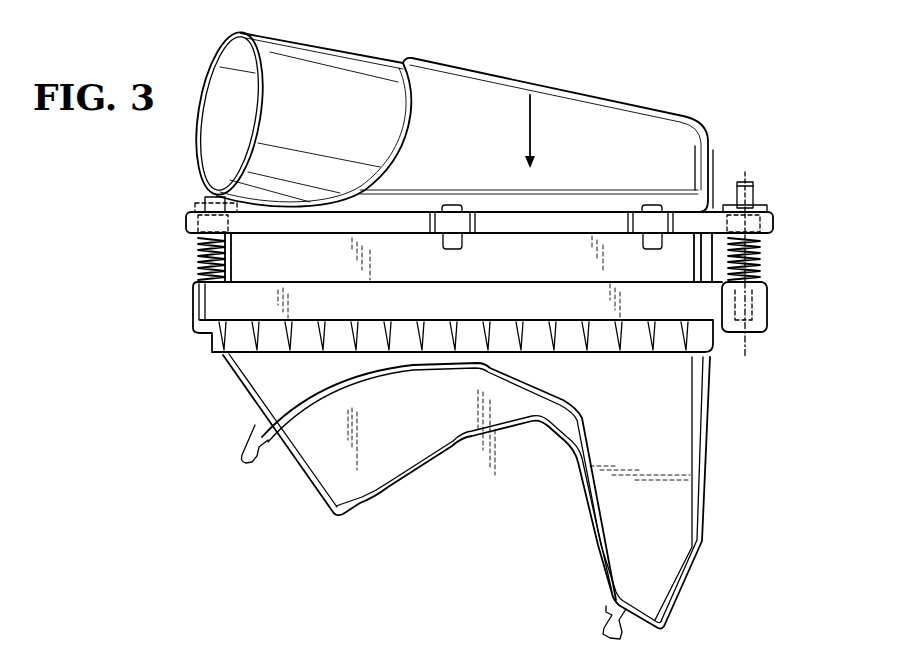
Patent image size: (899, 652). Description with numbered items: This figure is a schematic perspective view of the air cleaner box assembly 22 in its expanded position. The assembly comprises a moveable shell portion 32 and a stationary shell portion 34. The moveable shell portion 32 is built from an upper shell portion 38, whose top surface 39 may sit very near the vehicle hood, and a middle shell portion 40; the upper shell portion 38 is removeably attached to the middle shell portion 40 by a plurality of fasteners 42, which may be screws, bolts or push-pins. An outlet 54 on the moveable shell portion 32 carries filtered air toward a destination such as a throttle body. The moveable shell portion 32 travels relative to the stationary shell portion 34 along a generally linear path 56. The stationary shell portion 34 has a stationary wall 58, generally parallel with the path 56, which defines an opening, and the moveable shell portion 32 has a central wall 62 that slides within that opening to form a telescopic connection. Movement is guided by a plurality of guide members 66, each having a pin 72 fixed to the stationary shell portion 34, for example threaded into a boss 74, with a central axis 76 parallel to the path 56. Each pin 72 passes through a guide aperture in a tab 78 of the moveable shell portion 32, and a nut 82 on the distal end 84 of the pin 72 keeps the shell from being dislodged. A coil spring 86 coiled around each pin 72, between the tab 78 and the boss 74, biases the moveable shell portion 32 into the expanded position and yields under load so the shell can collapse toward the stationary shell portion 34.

The air cleaner box assembly 22 is at (681, 84).
The moveable shell portion 32 is at (505, 71).
The stationary shell portion 34 is at (667, 388).
The upper shell portion 38 is at (674, 137).
The top surface 39 is at (576, 90).
The middle shell portion 40 is at (603, 242).
The fasteners 42 is at (455, 242).
The outlet 54 is at (282, 72).
The path 56 is at (532, 132).
The stationary wall 58 is at (251, 308).
The central wall 62 is at (257, 258).
The guide members 66 is at (201, 265).
The pin 72 is at (758, 192).
The boss 74 is at (767, 300).
The central axis 76 is at (748, 343).
The tab 78 is at (775, 221).
The nut 82 is at (768, 208).
The distal end 84 is at (749, 180).
The spring 86 is at (760, 268).